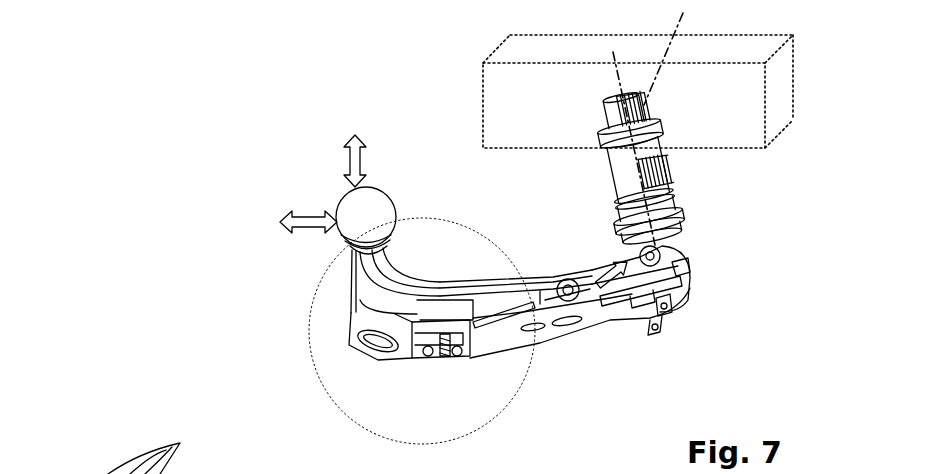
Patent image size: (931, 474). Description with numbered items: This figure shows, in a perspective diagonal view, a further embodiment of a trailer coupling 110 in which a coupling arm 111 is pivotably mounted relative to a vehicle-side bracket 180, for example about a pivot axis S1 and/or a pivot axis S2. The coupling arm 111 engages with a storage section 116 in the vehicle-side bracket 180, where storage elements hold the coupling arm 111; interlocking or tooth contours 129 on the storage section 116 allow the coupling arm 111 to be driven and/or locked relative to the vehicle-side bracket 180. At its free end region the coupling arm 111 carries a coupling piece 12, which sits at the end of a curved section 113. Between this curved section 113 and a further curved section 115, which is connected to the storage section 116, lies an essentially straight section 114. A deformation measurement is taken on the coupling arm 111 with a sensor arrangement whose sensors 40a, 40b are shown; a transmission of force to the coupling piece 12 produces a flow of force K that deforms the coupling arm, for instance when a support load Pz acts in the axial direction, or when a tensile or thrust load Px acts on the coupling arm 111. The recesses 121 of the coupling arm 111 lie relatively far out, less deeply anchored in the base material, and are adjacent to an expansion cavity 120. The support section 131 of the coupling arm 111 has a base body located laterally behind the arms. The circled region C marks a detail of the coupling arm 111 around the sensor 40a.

The trailer coupling 110 is at (128, 108).
The coupling piece 12 is at (346, 201).
The support load Pz is at (364, 153).
The tensile load or thrust load Px is at (286, 222).
The coupling arm 111 is at (410, 258).
The curved section 113 is at (357, 290).
The essentially straight section 114 is at (540, 291).
The flow of force K is at (613, 260).
The storage section 116 is at (670, 205).
The interlocking or tooth contours 129 is at (660, 122).
The expansion cavity 120 is at (678, 275).
The further curved section 115 is at (686, 276).
The sensor 40b is at (688, 292).
The recesses 121 is at (661, 314).
The sensor 40a is at (448, 372).
The detail region C is at (512, 410).
The support section 131 is at (237, 458).
The vehicle-side bracket 180 is at (492, 98).
The pivot axis S1 is at (615, 82).
The pivot axis S2 is at (680, 22).